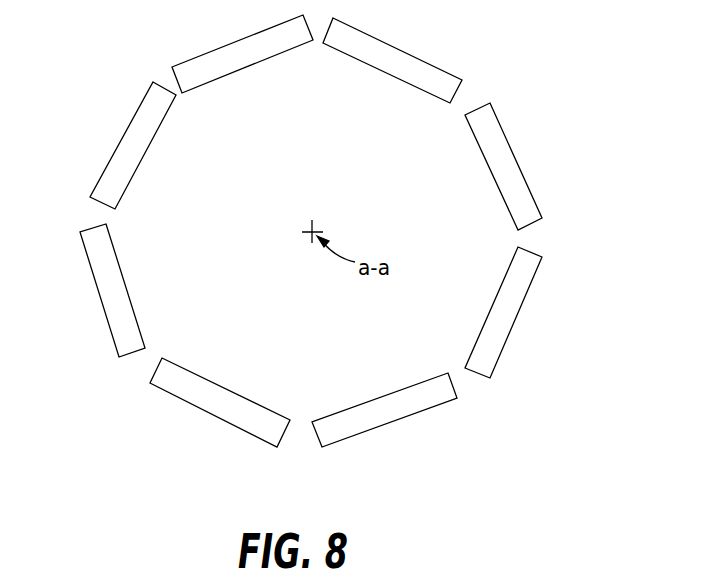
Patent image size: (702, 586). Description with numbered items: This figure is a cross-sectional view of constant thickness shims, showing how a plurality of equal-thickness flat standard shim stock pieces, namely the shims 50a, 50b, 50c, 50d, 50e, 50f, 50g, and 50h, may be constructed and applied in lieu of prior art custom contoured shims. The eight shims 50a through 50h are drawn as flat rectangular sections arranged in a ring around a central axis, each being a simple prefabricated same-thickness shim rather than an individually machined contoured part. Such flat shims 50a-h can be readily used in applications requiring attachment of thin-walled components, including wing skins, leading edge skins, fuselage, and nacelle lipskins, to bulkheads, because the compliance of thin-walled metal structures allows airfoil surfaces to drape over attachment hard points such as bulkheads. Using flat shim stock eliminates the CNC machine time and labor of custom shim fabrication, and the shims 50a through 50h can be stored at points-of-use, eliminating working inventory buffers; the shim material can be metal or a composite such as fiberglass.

The shim 50a is at (393, 60).
The shim 50b is at (507, 180).
The shim 50c is at (502, 318).
The shim 50d is at (390, 408).
The shim 50e is at (213, 403).
The shim 50f is at (113, 308).
The shim 50g is at (125, 152).
The shim 50h is at (238, 58).